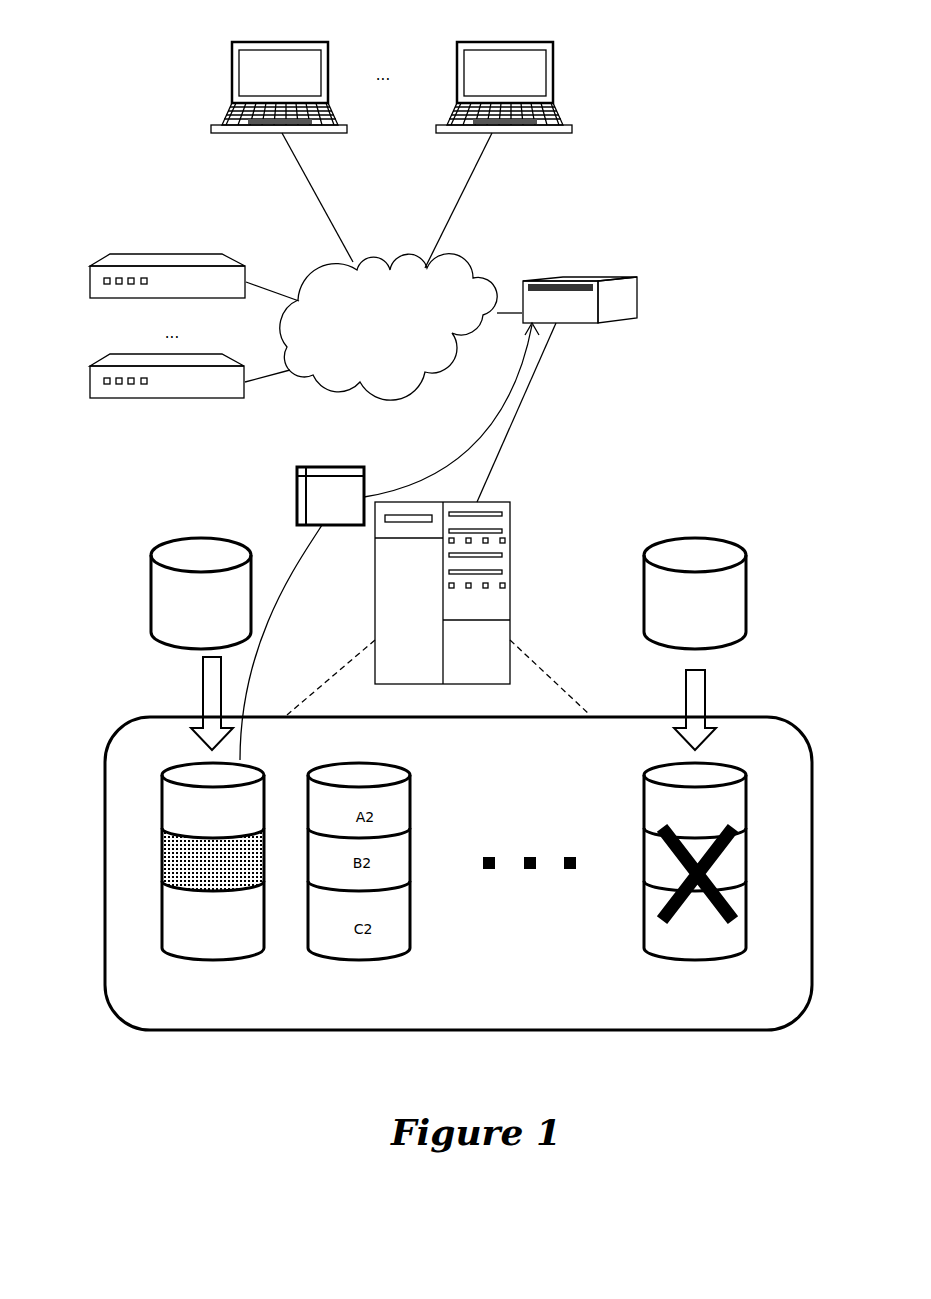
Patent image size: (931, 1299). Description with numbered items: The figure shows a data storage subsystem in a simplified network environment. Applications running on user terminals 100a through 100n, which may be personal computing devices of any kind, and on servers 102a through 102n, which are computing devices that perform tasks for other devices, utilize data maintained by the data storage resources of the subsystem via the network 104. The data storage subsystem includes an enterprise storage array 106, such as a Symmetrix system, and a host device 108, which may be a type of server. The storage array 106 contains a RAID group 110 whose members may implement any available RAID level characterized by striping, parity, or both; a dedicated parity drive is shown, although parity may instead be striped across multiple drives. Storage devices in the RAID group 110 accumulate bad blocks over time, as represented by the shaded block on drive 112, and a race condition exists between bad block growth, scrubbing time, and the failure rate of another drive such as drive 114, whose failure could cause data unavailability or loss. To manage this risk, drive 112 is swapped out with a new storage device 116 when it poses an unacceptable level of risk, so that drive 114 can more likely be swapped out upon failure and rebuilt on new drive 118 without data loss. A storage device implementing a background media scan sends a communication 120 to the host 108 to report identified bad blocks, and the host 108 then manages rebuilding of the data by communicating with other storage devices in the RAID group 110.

The user terminal 100a is at (290, 42).
The user terminal 100n is at (505, 42).
The server 102a is at (140, 254).
The server 102n is at (140, 354).
The network 104 is at (401, 327).
The enterprise storage array 106 is at (438, 608).
The host device 108 is at (590, 278).
The RAID group 110 is at (146, 848).
The drive 112 is at (152, 962).
The drive 114 is at (717, 987).
The new storage device 116 is at (201, 644).
The new drive 118 is at (695, 644).
The communication 120 is at (389, 541).